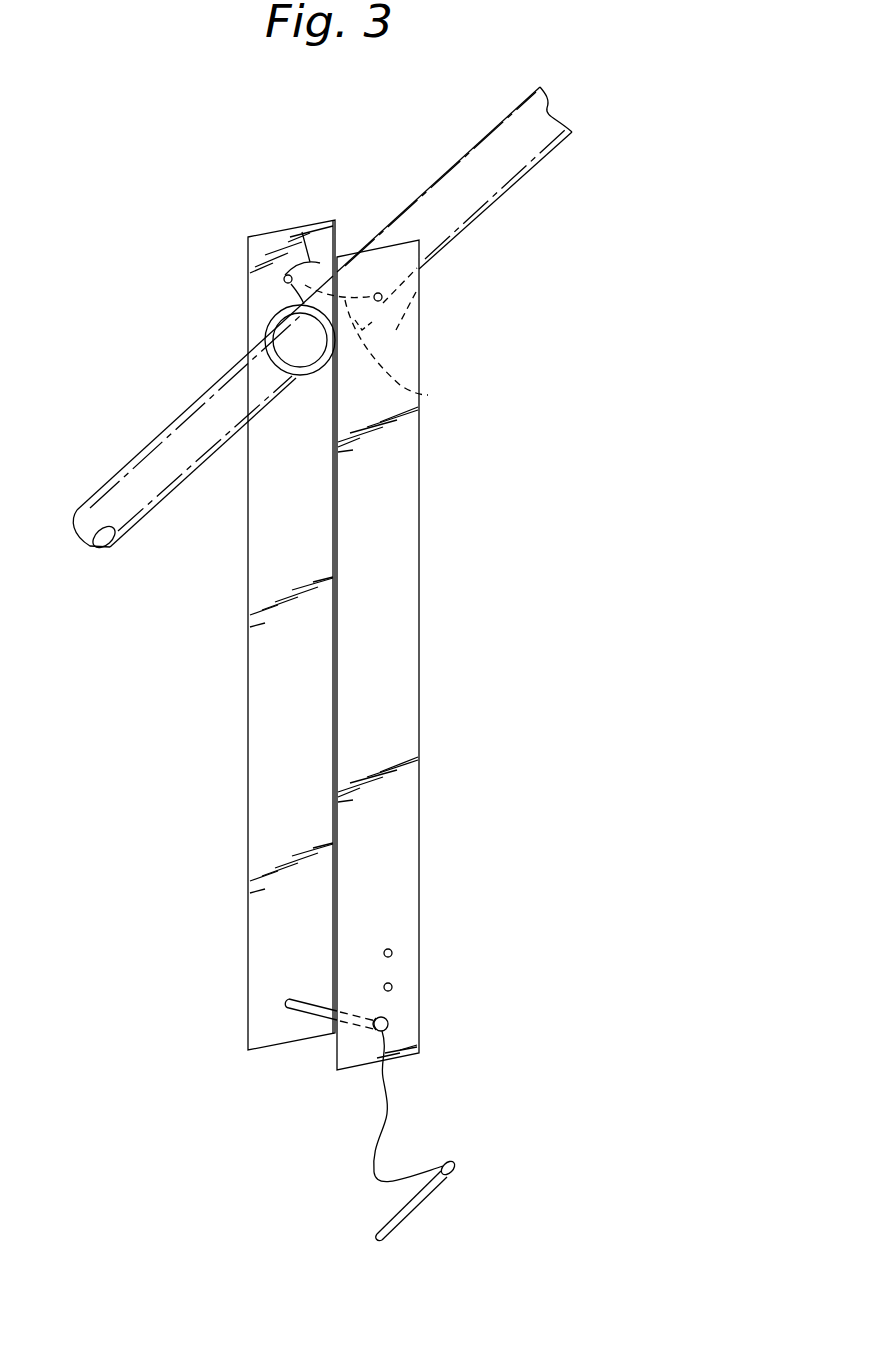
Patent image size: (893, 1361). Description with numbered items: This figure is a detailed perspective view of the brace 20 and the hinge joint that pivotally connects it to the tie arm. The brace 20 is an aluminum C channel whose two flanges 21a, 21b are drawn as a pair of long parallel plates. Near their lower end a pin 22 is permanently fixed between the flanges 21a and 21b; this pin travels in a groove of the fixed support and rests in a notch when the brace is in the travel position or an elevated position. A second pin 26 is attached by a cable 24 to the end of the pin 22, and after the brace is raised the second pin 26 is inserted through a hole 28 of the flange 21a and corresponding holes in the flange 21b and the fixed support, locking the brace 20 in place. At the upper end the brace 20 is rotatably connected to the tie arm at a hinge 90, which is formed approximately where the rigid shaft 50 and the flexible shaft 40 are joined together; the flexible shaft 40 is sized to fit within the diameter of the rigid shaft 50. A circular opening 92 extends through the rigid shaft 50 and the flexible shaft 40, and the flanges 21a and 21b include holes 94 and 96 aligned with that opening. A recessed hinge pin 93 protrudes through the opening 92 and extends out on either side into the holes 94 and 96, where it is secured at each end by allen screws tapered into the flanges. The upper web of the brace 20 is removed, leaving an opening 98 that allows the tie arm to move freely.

The brace 20 is at (366, 730).
The flange 21a is at (407, 522).
The flange 21b is at (258, 538).
The pin 22 is at (312, 1013).
The cable 24 is at (373, 1153).
The second pin 26 is at (417, 1205).
The hole 28 is at (393, 952).
The flexible shaft 40 is at (167, 440).
The rigid shaft 50 is at (490, 187).
The hinge 90 is at (337, 275).
The circular opening 92 is at (430, 395).
The recessed hinge pin 93 is at (307, 221).
The hole 94 is at (284, 279).
The hole 96 is at (384, 300).
The opening 98 is at (338, 243).